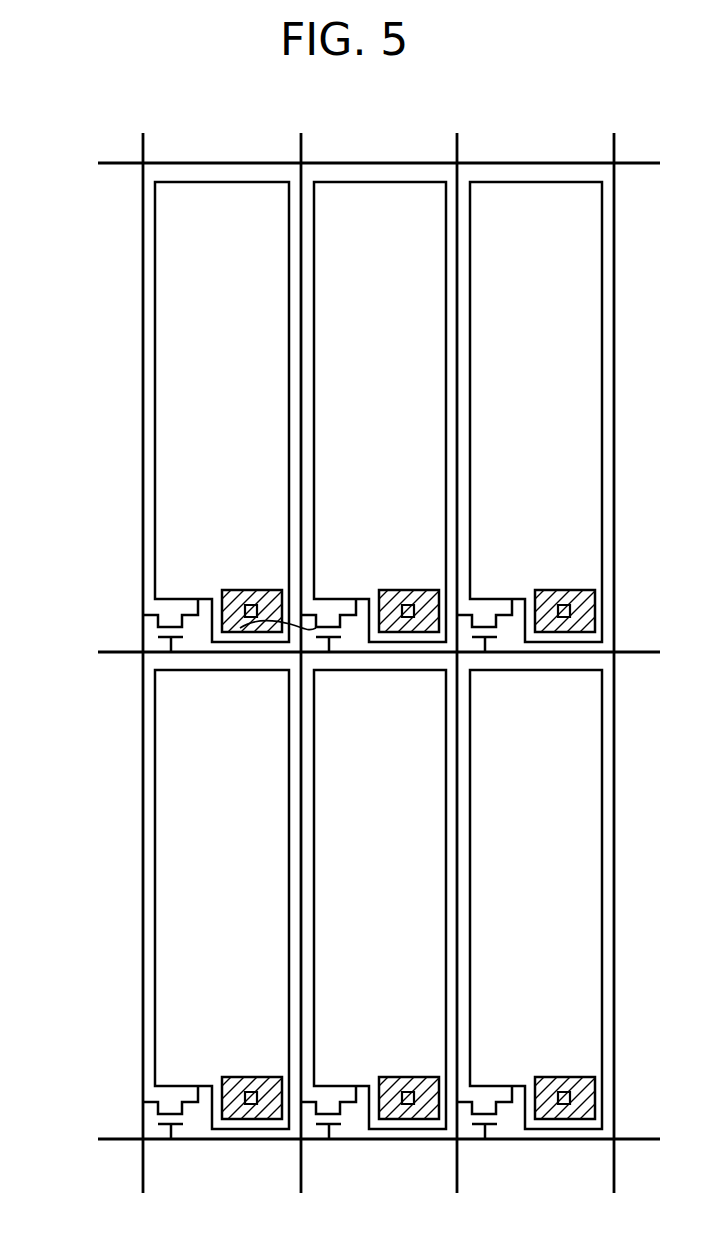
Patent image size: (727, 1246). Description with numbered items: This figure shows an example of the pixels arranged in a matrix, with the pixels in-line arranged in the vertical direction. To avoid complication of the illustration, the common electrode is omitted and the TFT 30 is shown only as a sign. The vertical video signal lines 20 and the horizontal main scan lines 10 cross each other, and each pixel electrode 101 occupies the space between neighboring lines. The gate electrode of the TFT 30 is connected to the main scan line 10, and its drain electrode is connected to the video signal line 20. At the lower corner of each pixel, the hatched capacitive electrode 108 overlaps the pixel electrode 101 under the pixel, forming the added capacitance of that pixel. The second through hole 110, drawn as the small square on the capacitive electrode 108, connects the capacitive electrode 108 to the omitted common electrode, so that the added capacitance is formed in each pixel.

The video signal line 20 is at (143, 216).
The main scan line 10 is at (132, 654).
The pixel electrode 101 is at (187, 405).
The capacitive electrode 108 is at (223, 598).
The second through hole 110 is at (248, 606).
The TFT 30 is at (158, 627).